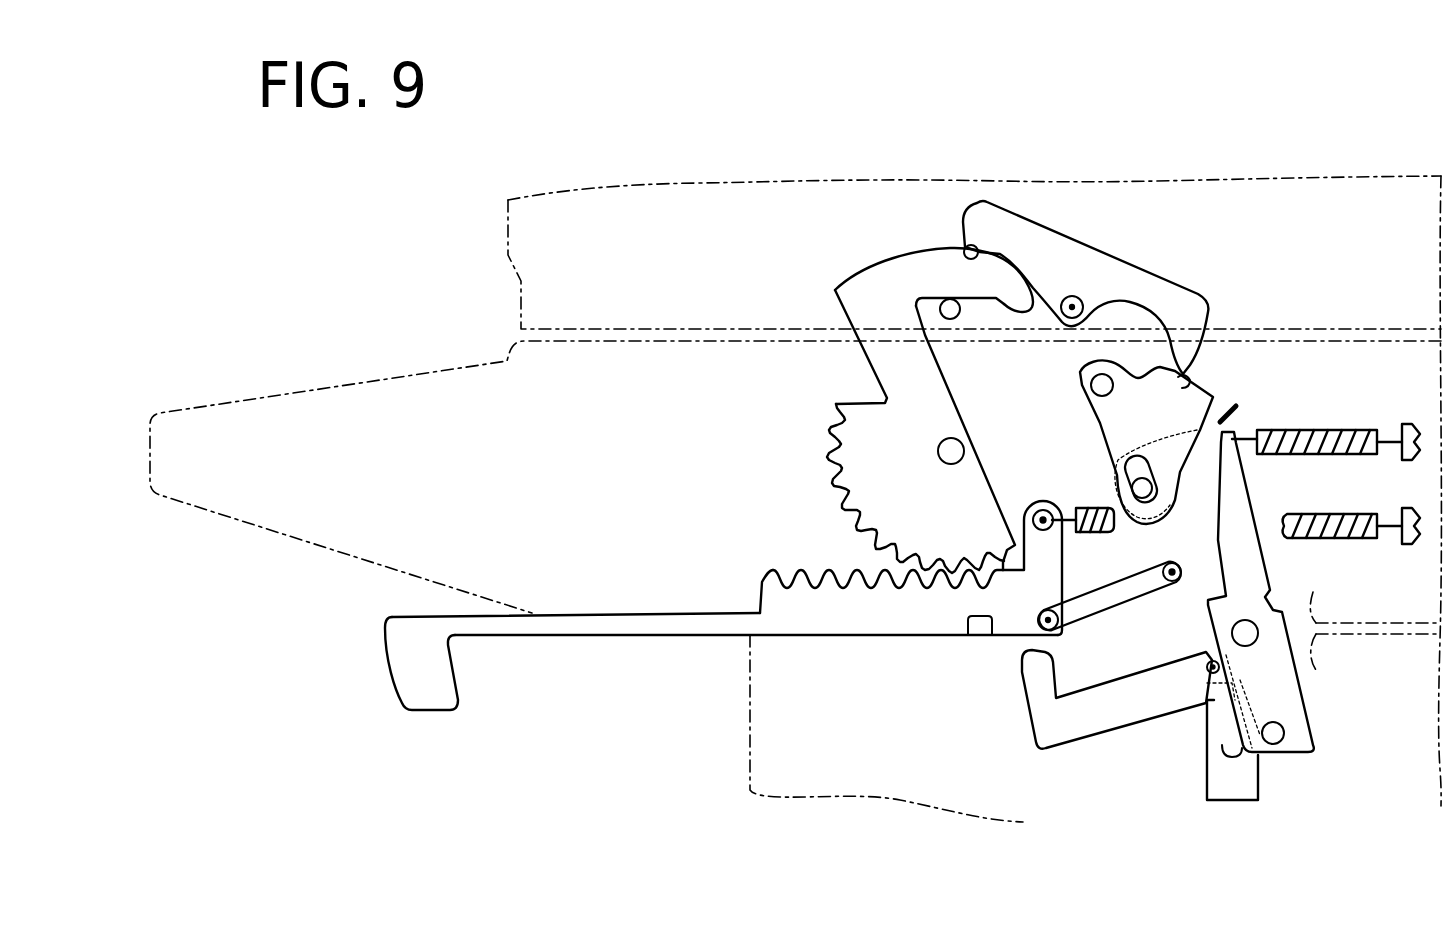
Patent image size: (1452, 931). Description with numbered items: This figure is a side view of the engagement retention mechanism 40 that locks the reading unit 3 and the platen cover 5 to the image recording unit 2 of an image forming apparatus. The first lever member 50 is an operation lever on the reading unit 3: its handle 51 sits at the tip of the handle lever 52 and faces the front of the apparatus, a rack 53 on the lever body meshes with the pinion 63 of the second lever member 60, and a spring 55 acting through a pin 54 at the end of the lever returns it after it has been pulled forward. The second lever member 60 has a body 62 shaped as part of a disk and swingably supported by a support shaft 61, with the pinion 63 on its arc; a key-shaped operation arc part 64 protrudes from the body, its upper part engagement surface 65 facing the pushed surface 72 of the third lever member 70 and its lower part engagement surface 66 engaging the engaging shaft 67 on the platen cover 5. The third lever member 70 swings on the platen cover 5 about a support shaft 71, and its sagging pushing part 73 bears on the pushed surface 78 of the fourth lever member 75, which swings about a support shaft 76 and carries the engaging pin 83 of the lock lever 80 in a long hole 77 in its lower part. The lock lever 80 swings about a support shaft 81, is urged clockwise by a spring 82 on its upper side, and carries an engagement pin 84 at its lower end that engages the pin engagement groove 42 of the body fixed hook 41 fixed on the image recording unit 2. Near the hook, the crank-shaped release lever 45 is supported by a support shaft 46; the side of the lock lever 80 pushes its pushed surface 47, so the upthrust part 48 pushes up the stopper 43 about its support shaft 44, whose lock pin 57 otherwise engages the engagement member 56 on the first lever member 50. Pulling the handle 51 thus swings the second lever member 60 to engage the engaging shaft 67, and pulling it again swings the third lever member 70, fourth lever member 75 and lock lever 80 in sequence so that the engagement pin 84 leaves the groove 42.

The image recording unit 2 is at (910, 791).
The reading unit 3 is at (588, 486).
The platen cover 5 is at (612, 269).
The engagement retention mechanism 40 is at (938, 652).
The body fixed hook 41 is at (1209, 784).
The pin engagement groove 42 is at (1225, 755).
The stopper 43 is at (1093, 612).
The support shaft 44 is at (1172, 568).
The release lever 45 is at (1082, 713).
The support shaft 46 is at (1208, 665).
The pushed surface 47 is at (1235, 677).
The upthrust part 48 is at (1015, 652).
The first lever member 50 is at (908, 600).
The handle 51 is at (425, 690).
The handle lever 52 is at (630, 620).
The rack 53 is at (795, 577).
The pin 54 is at (1040, 509).
The spring 55 is at (1342, 512).
The engagement member 56 is at (968, 628).
The lock pin 57 is at (1046, 616).
The second lever member 60 is at (909, 381).
The support shaft 61 is at (955, 464).
The body 62 is at (882, 486).
The pinion 63 is at (827, 460).
The operation arc part 64 is at (903, 280).
The upper part engagement surface 65 is at (890, 256).
The lower part engagement surface 66 is at (1003, 307).
The engaging shaft 67 is at (955, 318).
The third lever member 70 is at (1077, 292).
The support shaft 71 is at (1077, 297).
The pushed surface 72 is at (966, 247).
The pushing part 73 is at (1188, 385).
The fourth lever member 75 is at (1155, 441).
The support shaft 76 is at (1090, 392).
The long hole 77 is at (1143, 510).
The pushed surface 78 is at (1233, 400).
The lock lever 80 is at (1257, 614).
The support shaft 81 is at (1232, 633).
The spring 82 is at (1348, 430).
The engaging pin 83 is at (1152, 485).
The engagement pin 84 is at (1283, 742).